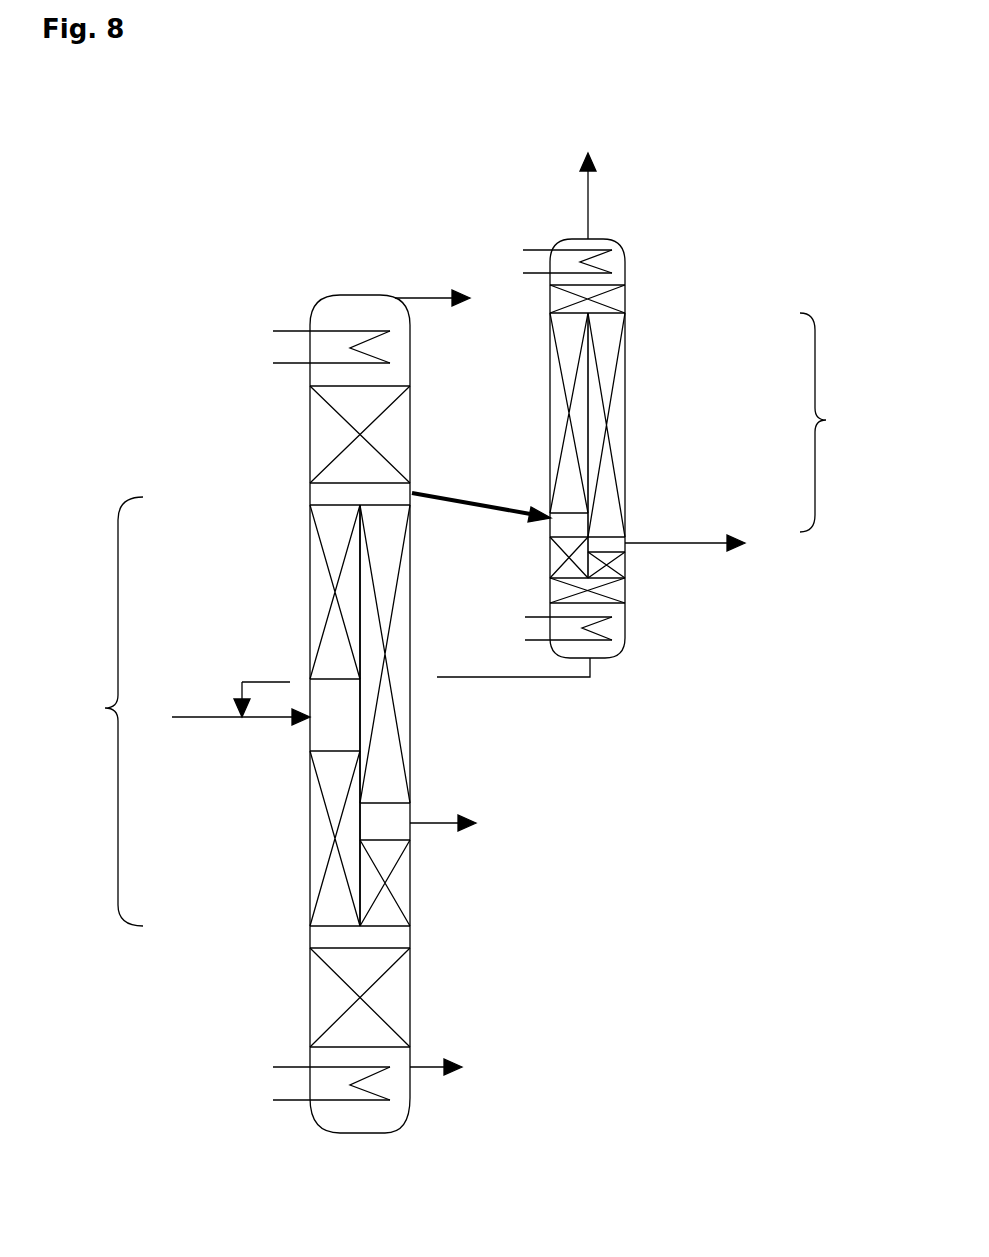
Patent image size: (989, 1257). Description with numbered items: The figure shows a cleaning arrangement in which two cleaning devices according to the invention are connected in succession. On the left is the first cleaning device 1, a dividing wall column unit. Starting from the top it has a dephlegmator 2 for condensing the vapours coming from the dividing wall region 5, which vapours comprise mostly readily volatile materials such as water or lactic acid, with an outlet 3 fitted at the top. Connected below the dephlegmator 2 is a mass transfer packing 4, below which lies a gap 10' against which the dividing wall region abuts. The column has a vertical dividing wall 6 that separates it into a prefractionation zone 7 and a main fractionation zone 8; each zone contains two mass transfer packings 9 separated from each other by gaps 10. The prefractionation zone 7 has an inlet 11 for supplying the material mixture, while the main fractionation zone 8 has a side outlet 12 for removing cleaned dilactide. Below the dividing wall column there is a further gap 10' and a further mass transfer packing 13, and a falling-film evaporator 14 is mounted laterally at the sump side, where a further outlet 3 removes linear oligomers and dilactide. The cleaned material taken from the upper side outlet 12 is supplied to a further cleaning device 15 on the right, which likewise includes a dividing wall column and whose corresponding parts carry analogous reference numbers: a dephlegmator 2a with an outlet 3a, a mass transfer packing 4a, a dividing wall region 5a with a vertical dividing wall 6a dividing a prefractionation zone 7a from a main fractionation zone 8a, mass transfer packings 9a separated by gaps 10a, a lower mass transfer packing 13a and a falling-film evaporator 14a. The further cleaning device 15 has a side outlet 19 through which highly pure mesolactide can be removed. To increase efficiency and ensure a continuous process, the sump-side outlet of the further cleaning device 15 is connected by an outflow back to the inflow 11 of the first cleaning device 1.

The cleaning device 1 is at (222, 328).
The dephlegmator 2 is at (355, 325).
The outlet 3 is at (418, 297).
The mass transfer packing 4 is at (330, 425).
The dividing wall region 5 is at (231, 711).
The vertical dividing wall 6 is at (360, 605).
The prefractionation zone 7 is at (325, 772).
The main fractionation zone 8 is at (407, 764).
The mass transfer packings 9 is at (330, 550).
The gaps 10 is at (331, 754).
The gap 10' is at (294, 713).
The inlet 11 is at (208, 720).
The side outlet 12 is at (461, 490).
The mass transfer packing 13 is at (330, 1003).
The falling-film evaporator 14 is at (330, 1085).
The further cleaning device 15 is at (678, 295).
The dephlegmator 2a is at (610, 262).
The outlet 3a is at (581, 160).
The mass transfer packing 4a is at (563, 292).
The dividing wall region 5a is at (830, 422).
The vertical dividing wall 6a is at (590, 372).
The prefractionation zone 7a is at (560, 344).
The main fractionation zone 8a is at (631, 424).
The mass transfer packings 9a is at (557, 407).
The gaps 10a is at (570, 527).
The mass transfer packing 13a is at (620, 590).
The falling-film evaporator 14a is at (614, 630).
The side outlet 19 is at (705, 543).